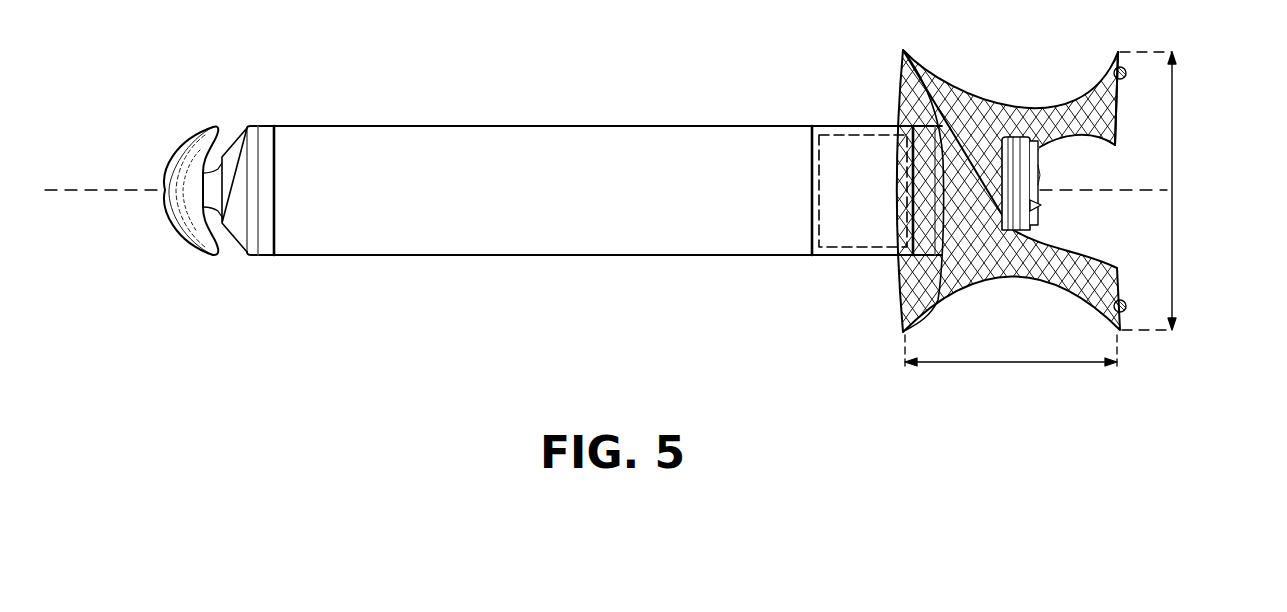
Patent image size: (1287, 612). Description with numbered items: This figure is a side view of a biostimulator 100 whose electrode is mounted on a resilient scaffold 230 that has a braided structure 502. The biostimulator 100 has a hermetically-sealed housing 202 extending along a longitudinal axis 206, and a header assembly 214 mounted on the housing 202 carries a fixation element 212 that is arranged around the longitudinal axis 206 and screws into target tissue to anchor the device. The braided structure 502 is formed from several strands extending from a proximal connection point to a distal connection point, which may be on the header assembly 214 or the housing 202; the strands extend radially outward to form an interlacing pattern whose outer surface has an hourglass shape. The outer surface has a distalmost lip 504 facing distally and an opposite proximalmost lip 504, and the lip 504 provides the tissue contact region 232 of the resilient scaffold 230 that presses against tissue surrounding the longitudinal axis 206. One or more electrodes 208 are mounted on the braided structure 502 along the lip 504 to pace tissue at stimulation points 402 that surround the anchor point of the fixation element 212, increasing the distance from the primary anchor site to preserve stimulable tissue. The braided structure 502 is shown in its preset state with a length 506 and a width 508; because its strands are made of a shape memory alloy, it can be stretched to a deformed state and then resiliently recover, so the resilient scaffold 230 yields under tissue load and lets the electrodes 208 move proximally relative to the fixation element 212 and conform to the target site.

The biostimulator 100 is at (386, 76).
The housing 202 is at (686, 256).
The longitudinal axis 206 is at (118, 190).
The fixation element 212 is at (1032, 227).
The header assembly 214 is at (1011, 176).
The resilient scaffold 230 is at (971, 177).
The braided structure 502 is at (940, 78).
The tissue contact region 232 is at (1124, 92).
The lip 504 is at (1193, 104).
The electrode 208 is at (1193, 286).
The stimulation points 402 is at (1127, 306).
The length 506 is at (1000, 365).
The width 508 is at (1173, 93).